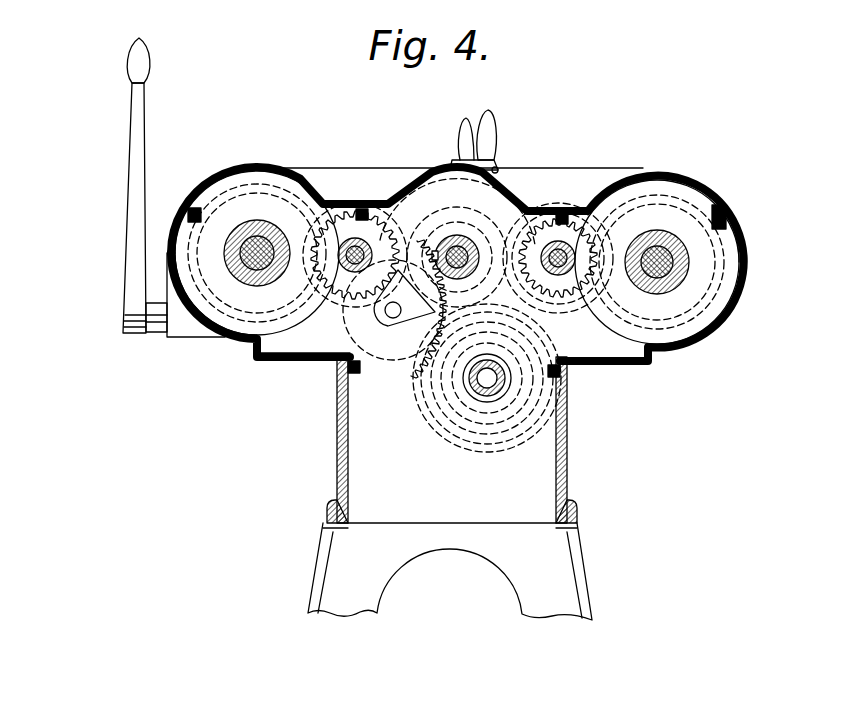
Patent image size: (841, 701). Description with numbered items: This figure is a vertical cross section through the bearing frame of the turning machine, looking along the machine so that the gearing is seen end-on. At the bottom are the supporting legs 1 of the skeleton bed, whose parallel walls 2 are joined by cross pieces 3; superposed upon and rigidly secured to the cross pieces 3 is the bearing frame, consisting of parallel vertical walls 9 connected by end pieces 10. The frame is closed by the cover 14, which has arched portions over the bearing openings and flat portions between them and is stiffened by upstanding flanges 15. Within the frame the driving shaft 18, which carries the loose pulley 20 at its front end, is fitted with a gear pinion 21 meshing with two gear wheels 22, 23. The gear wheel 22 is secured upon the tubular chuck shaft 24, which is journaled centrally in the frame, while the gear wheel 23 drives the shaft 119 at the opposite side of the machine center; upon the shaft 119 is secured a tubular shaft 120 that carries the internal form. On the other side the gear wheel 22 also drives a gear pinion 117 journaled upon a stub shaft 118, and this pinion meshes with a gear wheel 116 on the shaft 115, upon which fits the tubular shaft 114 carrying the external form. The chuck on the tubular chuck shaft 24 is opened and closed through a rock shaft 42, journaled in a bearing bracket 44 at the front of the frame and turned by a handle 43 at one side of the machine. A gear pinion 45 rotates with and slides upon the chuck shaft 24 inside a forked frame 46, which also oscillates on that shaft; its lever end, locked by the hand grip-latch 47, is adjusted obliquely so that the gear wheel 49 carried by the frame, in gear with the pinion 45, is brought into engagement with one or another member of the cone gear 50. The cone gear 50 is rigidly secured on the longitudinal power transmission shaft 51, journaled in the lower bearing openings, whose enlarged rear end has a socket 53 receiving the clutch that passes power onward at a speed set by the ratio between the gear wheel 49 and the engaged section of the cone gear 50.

The supporting legs 1 is at (323, 533).
The parallel walls 2 is at (335, 460).
The cross pieces 3 is at (461, 493).
The vertical walls 9 is at (300, 352).
The end pieces 10 is at (745, 293).
The cover 14 is at (295, 172).
The upstanding flanges 15 is at (352, 175).
The driving shaft 18 is at (565, 245).
The loose pulley 20 is at (555, 203).
The gear pinion 21 is at (578, 290).
The gear wheel 22 is at (420, 217).
The gear wheel 23 is at (678, 207).
The tubular chuck shaft 24 is at (477, 242).
The rock shaft 42 is at (150, 330).
The handle 43 is at (128, 168).
The bearing bracket 44 is at (200, 337).
The gear pinion 45 is at (365, 181).
The forked frame 46 is at (385, 333).
The hand grip-latch 47 is at (472, 150).
The gear wheel 49 is at (390, 350).
The cone gear 50 is at (425, 377).
The power transmission shaft 51 is at (487, 395).
The socket 53 is at (475, 380).
The tubular shaft 114 is at (197, 205).
The shaft 115 is at (245, 235).
The gear wheel 116 is at (263, 210).
The gear pinion 117 is at (322, 236).
The stub shaft 118 is at (350, 260).
The shaft 119 is at (662, 292).
The tubular shaft 120 is at (690, 262).